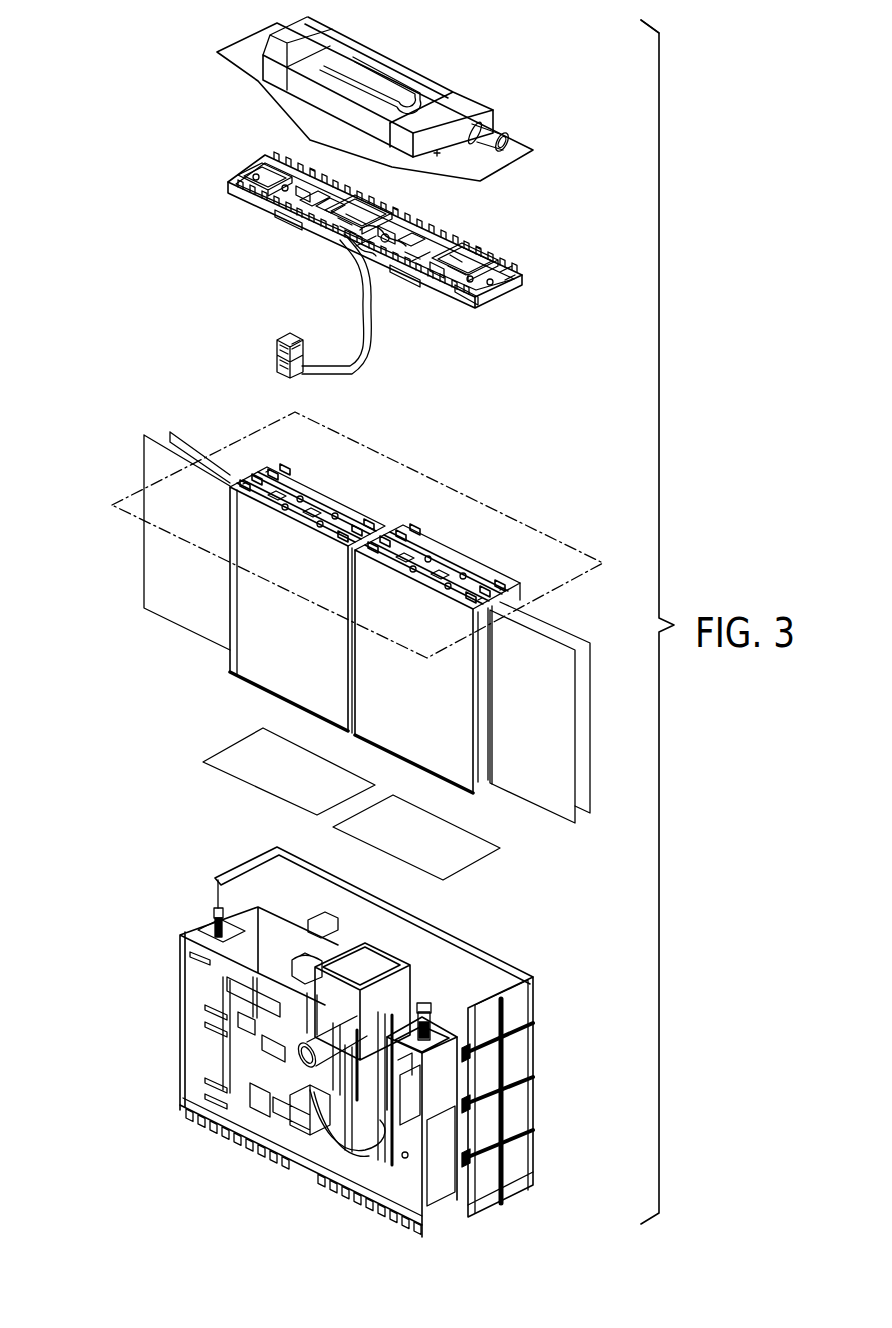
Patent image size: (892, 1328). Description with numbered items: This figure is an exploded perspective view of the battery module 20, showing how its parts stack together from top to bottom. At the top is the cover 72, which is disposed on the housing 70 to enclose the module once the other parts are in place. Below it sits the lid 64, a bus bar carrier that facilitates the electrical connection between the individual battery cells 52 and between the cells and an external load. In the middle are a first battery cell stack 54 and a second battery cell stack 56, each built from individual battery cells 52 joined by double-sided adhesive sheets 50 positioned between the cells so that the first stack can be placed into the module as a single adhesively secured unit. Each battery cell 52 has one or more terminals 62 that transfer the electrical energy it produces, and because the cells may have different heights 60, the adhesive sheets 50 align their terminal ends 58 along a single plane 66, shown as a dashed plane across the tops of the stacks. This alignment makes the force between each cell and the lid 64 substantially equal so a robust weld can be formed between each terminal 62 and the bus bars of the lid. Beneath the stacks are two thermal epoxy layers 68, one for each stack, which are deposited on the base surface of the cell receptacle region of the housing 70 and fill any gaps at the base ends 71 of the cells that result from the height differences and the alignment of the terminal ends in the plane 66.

The battery module 20 is at (545, 350).
The double-sided adhesive sheets 50 is at (175, 442).
The battery cells 52 is at (268, 470).
The first battery cell stack 54 is at (495, 802).
The second battery cell stack 56 is at (233, 688).
The terminal ends 58 is at (423, 543).
The heights 60 is at (415, 583).
The terminals 62 is at (280, 473).
The lid 64 is at (453, 220).
The single plane 66 is at (448, 487).
The thermal epoxy layers 68 is at (368, 822).
The housing 70 is at (488, 1075).
The base ends 71 is at (252, 702).
The cover 72 is at (453, 113).